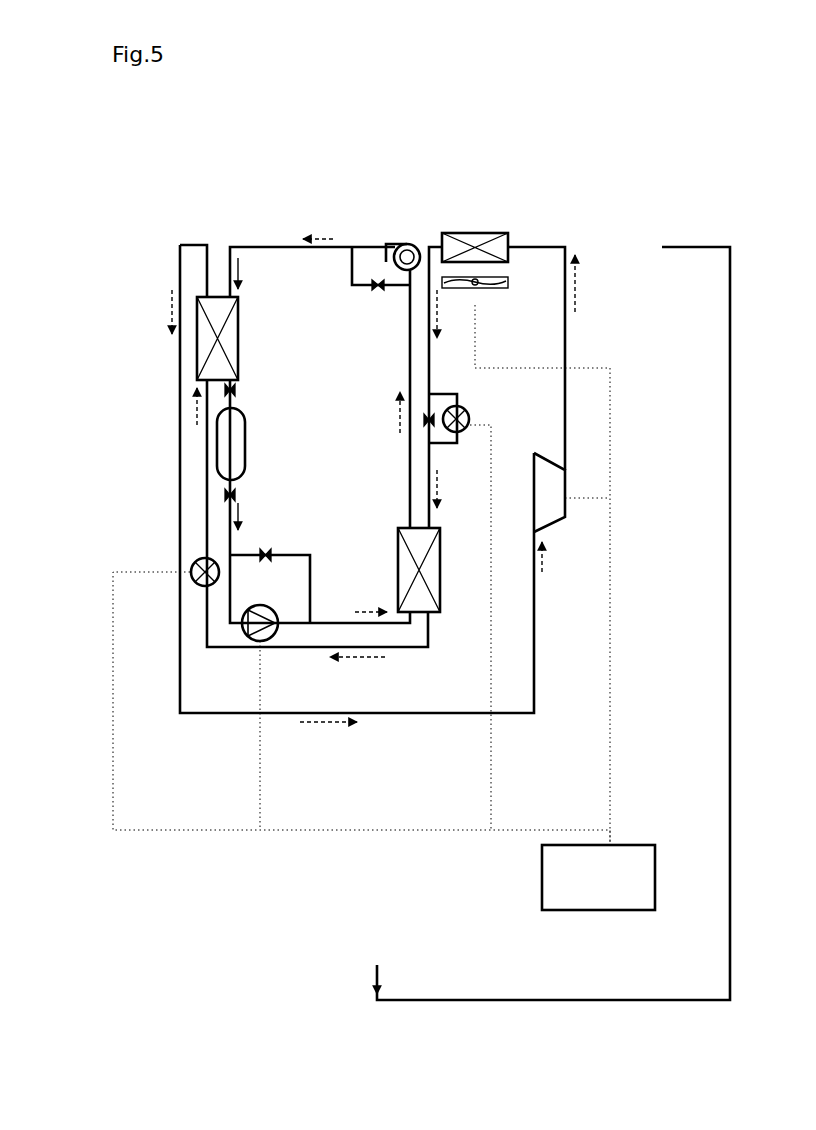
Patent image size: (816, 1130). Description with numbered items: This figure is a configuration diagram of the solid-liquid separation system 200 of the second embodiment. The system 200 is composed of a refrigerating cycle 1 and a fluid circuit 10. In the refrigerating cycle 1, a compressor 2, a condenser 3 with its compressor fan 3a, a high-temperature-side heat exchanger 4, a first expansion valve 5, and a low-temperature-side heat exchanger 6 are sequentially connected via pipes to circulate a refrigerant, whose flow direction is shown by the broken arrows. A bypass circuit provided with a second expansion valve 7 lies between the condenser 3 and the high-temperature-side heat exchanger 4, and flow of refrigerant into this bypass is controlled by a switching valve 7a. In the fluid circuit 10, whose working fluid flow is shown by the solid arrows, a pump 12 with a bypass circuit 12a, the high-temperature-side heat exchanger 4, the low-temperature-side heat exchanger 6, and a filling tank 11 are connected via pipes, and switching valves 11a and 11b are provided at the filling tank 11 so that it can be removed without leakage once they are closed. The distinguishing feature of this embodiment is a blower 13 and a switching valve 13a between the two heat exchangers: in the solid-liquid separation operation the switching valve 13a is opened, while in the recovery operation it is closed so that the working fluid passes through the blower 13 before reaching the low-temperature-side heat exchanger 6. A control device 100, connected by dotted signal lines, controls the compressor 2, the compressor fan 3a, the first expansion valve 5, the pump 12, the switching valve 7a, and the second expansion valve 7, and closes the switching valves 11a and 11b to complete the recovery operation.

The solid-liquid separation system 200 is at (337, 177).
The refrigerating cycle 1 is at (565, 343).
The compressor 2 is at (565, 478).
The condenser 3 is at (483, 232).
The compressor fan 3a is at (468, 290).
The high-temperature-side heat exchanger 4 is at (440, 595).
The first expansion valve 5 is at (193, 582).
The low-temperature-side heat exchanger 6 is at (238, 323).
The second expansion valve 7 is at (466, 412).
The switching valve 7a is at (426, 422).
The fluid circuit 10 is at (267, 245).
The filling tank 11 is at (245, 432).
The switching valve 11a is at (235, 386).
The switching valve 11b is at (235, 490).
The pump 12 is at (258, 605).
The bypass circuit 12a is at (268, 550).
The blower 13 is at (395, 243).
The switching valve 13a is at (375, 290).
The control device 100 is at (572, 910).